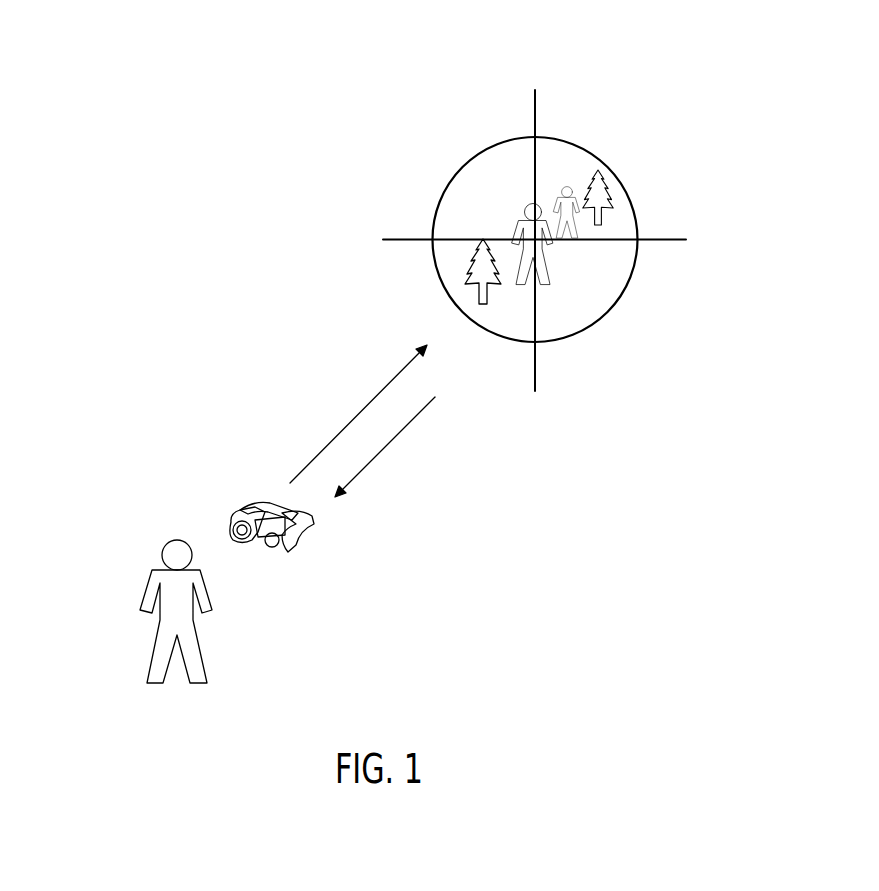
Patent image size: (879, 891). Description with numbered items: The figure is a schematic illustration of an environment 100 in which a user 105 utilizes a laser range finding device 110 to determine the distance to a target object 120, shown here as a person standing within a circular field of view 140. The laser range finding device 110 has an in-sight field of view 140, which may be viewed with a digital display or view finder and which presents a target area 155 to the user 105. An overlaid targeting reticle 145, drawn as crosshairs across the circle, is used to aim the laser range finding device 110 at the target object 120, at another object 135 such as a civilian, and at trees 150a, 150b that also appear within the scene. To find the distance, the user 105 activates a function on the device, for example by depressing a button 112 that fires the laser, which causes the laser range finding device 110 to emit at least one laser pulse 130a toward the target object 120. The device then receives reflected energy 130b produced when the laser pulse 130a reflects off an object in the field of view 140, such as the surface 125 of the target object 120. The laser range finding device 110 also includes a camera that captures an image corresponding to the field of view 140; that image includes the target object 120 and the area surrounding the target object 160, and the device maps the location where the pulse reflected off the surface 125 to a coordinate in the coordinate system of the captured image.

The environment 100 is at (201, 53).
The user 105 is at (150, 595).
The laser range finding device 110 is at (258, 503).
The button 112 is at (290, 520).
The target object 120 is at (516, 222).
The surface 125 is at (539, 249).
The laser pulse 130a is at (380, 390).
The reflected energy 130b is at (387, 447).
The another object 135 is at (568, 186).
The field of view 140 is at (479, 153).
The targeting reticle 145 is at (536, 94).
The tree 150a is at (606, 199).
The tree 150b is at (470, 279).
The target area 155 is at (545, 166).
The area surrounding the target object 160 is at (604, 259).